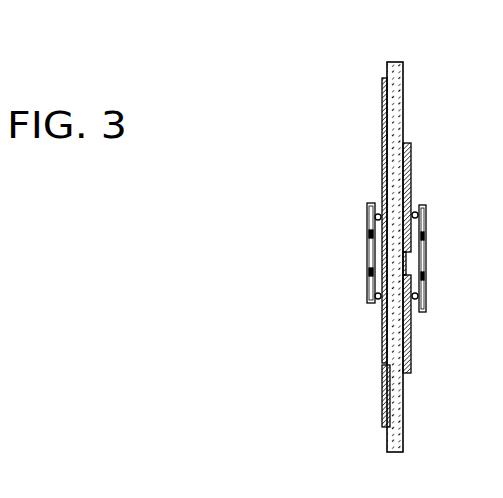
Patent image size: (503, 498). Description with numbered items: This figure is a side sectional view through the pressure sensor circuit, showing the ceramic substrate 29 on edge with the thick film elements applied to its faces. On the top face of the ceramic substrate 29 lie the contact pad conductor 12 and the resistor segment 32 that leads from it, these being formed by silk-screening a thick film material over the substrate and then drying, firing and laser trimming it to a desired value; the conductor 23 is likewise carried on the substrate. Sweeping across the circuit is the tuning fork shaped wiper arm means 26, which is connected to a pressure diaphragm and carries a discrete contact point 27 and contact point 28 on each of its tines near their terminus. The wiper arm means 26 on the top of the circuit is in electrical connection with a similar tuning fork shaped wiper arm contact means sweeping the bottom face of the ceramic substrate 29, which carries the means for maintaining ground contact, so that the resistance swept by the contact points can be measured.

The thick film contact pad conductor 12 is at (383, 172).
The conductor 23 is at (382, 97).
The wiper arm means 26 is at (368, 255).
The contact point 27 is at (377, 212).
The contact point 28 is at (378, 301).
The ceramic substrate 29 is at (403, 72).
The resistor segment 32 is at (383, 402).